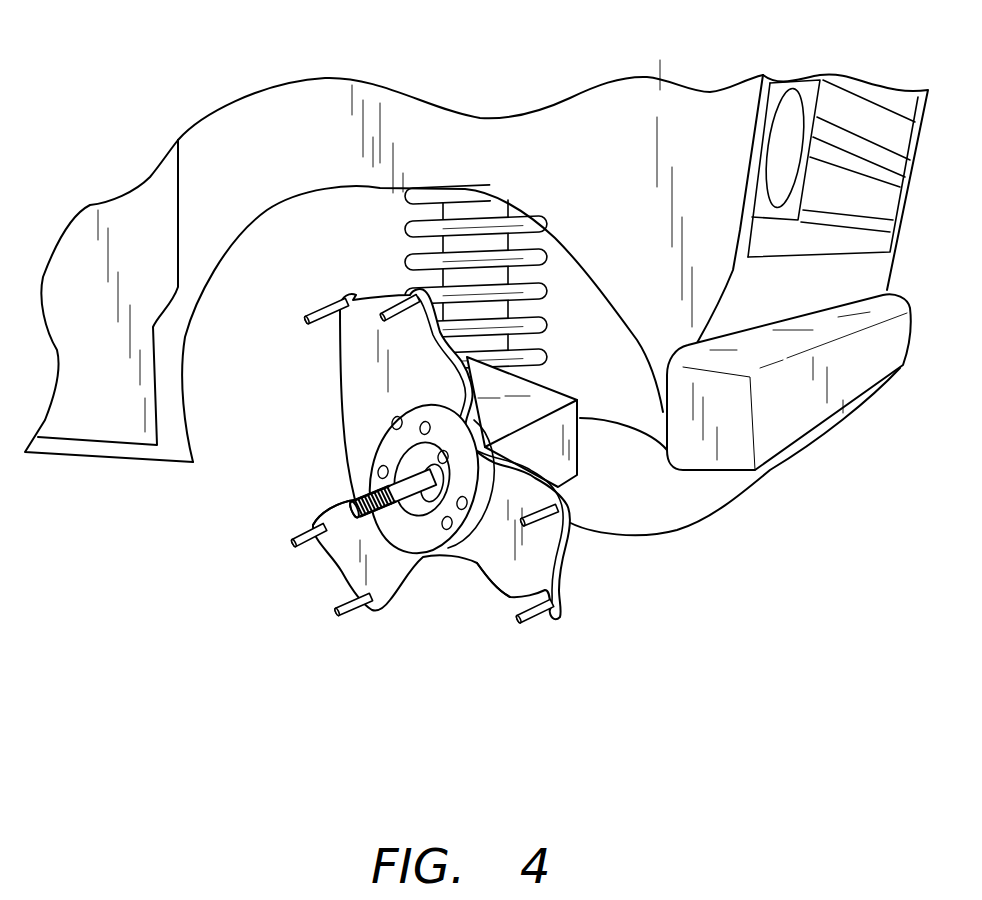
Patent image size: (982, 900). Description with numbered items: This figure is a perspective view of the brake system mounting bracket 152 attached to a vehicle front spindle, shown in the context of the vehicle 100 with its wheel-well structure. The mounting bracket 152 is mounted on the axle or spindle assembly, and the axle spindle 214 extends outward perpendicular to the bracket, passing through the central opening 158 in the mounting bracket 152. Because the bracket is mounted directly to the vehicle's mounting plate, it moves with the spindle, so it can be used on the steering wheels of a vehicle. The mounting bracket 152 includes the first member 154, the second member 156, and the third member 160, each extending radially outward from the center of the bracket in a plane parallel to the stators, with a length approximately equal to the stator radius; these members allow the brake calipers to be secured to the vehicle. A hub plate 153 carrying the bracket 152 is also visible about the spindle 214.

The vehicle body 100 is at (303, 108).
The mounting bracket 152 is at (451, 536).
The hub mounting plate 153 is at (459, 530).
The first member 154 is at (372, 318).
The second member 156 is at (527, 557).
The central opening 158 is at (440, 505).
The third member 160 is at (343, 557).
The axle spindle 214 is at (408, 483).